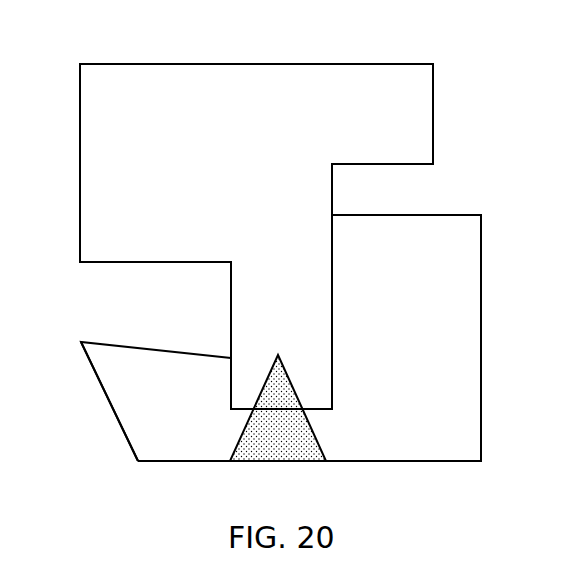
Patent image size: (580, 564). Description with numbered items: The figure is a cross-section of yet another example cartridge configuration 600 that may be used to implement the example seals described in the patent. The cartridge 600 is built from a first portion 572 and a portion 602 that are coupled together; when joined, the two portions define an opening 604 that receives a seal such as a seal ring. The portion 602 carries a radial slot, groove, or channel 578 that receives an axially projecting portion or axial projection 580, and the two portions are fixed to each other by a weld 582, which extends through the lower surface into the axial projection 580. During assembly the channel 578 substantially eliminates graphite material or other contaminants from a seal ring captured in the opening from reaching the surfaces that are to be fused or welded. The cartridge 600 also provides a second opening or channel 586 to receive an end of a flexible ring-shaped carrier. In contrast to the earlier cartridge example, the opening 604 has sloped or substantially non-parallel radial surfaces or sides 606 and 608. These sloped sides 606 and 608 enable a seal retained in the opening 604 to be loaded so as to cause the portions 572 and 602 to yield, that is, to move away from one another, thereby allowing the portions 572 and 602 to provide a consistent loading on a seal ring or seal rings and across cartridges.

The cartridge configuration 600 is at (520, 74).
The first portion 572 is at (217, 88).
The channel 578 is at (232, 383).
The axial projection 580 is at (315, 287).
The weld 582 is at (383, 461).
The second channel 586 is at (415, 215).
The portion 602 is at (462, 412).
The opening 604 is at (102, 343).
The sloped side 606 is at (120, 348).
The sloped side 608 is at (103, 262).